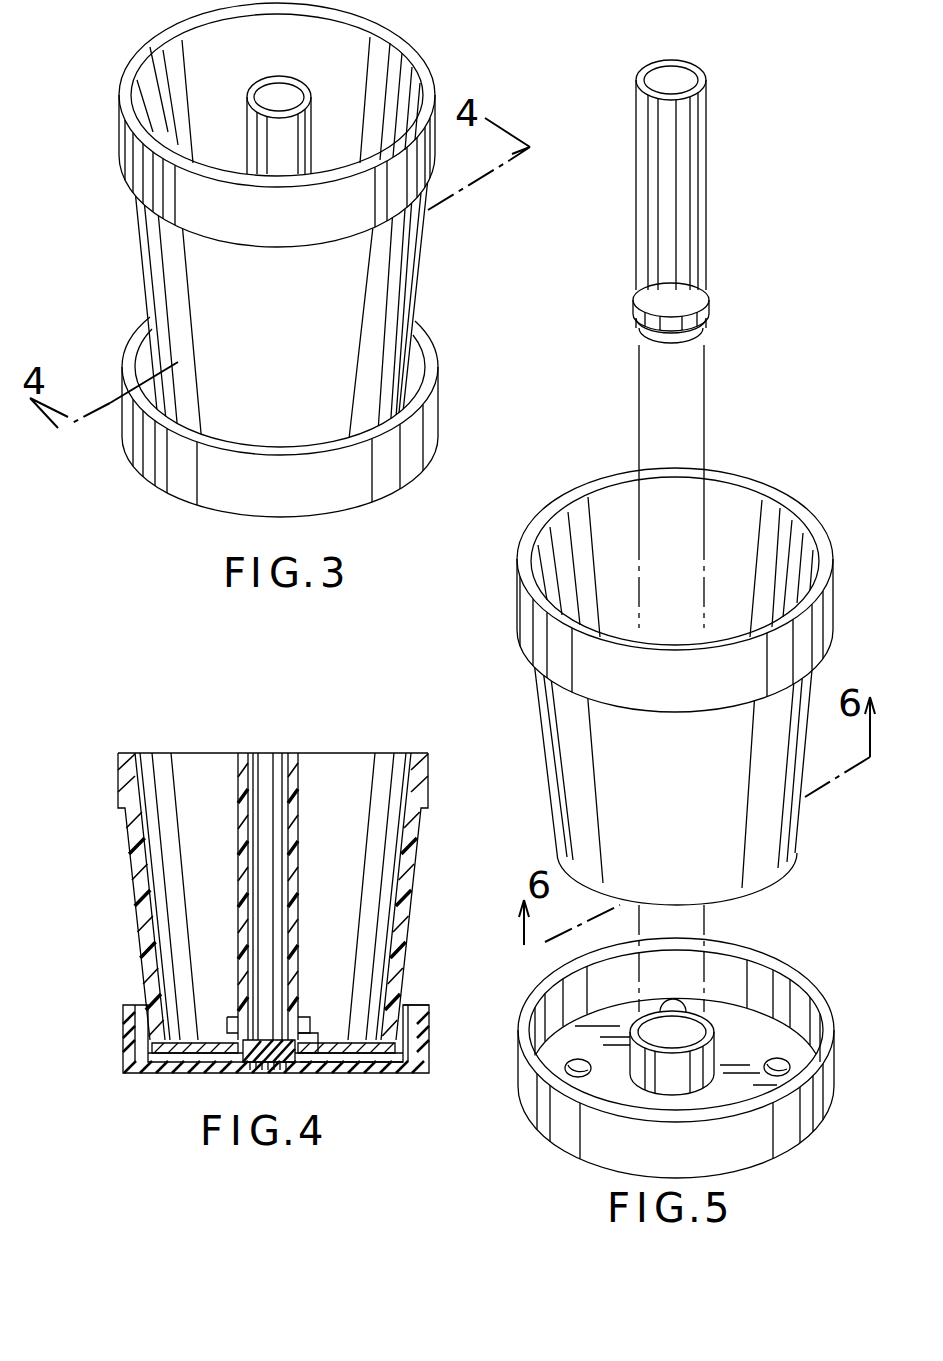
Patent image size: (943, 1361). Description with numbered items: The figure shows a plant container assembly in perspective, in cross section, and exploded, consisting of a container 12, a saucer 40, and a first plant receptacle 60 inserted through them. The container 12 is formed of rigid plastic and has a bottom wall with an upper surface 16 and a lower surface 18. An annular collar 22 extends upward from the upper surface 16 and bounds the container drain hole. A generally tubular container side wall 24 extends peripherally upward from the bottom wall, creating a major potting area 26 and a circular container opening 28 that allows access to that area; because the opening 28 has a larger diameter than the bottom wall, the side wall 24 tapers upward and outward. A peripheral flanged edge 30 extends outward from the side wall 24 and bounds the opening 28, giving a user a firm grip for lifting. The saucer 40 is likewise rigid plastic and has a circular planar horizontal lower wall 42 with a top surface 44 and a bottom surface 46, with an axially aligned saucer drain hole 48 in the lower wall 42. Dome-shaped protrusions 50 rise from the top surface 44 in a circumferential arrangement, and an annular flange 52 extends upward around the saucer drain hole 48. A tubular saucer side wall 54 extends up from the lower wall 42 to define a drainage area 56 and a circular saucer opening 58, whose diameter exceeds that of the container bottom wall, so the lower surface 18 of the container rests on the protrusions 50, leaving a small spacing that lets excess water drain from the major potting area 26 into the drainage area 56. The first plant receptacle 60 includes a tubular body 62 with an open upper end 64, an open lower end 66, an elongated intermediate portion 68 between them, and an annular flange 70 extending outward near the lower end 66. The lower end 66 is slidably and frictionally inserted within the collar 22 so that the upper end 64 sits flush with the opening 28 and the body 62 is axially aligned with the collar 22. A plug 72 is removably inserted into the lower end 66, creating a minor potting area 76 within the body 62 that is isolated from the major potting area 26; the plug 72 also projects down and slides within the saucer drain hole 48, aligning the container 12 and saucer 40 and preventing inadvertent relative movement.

In FIG. 3, the container 12 is at (397, 275).
In FIG. 4, the upper surface 16 is at (313, 1038).
In FIG. 4, the lower surface 18 is at (340, 1073).
In FIG. 4, the annular collar 22 is at (352, 1000).
In FIG. 5, the container side wall 24 is at (593, 797).
In FIG. 4, the major potting area 26 is at (338, 778).
In FIG. 4, the container opening 28 is at (160, 753).
In FIG. 5, the peripheral flanged edge 30 is at (517, 582).
In FIG. 3, the saucer 40 is at (420, 437).
In FIG. 5, the lower wall 42 is at (727, 1023).
In FIG. 4, the top surface 44 is at (198, 1046).
In FIG. 4, the bottom surface 46 is at (168, 1073).
In FIG. 4, the saucer drain hole 48 is at (273, 1067).
In FIG. 5, the protrusions 50 is at (780, 1058).
In FIG. 5, the annular flange 52 is at (637, 1058).
In FIG. 5, the saucer side wall 54 is at (537, 1092).
In FIG. 3, the drainage area 56 is at (413, 350).
In FIG. 4, the saucer opening 58 is at (420, 1005).
In FIG. 3, the first plant receptacle 60 is at (297, 85).
In FIG. 5, the tubular body 62 is at (722, 158).
In FIG. 5, the upper end 64 is at (695, 72).
In FIG. 5, the lower end 66 is at (700, 345).
In FIG. 5, the intermediate portion 68 is at (700, 275).
In FIG. 5, the annular flange 70 is at (710, 310).
In FIG. 4, the plug 72 is at (260, 1037).
In FIG. 4, the minor potting area 76 is at (267, 775).